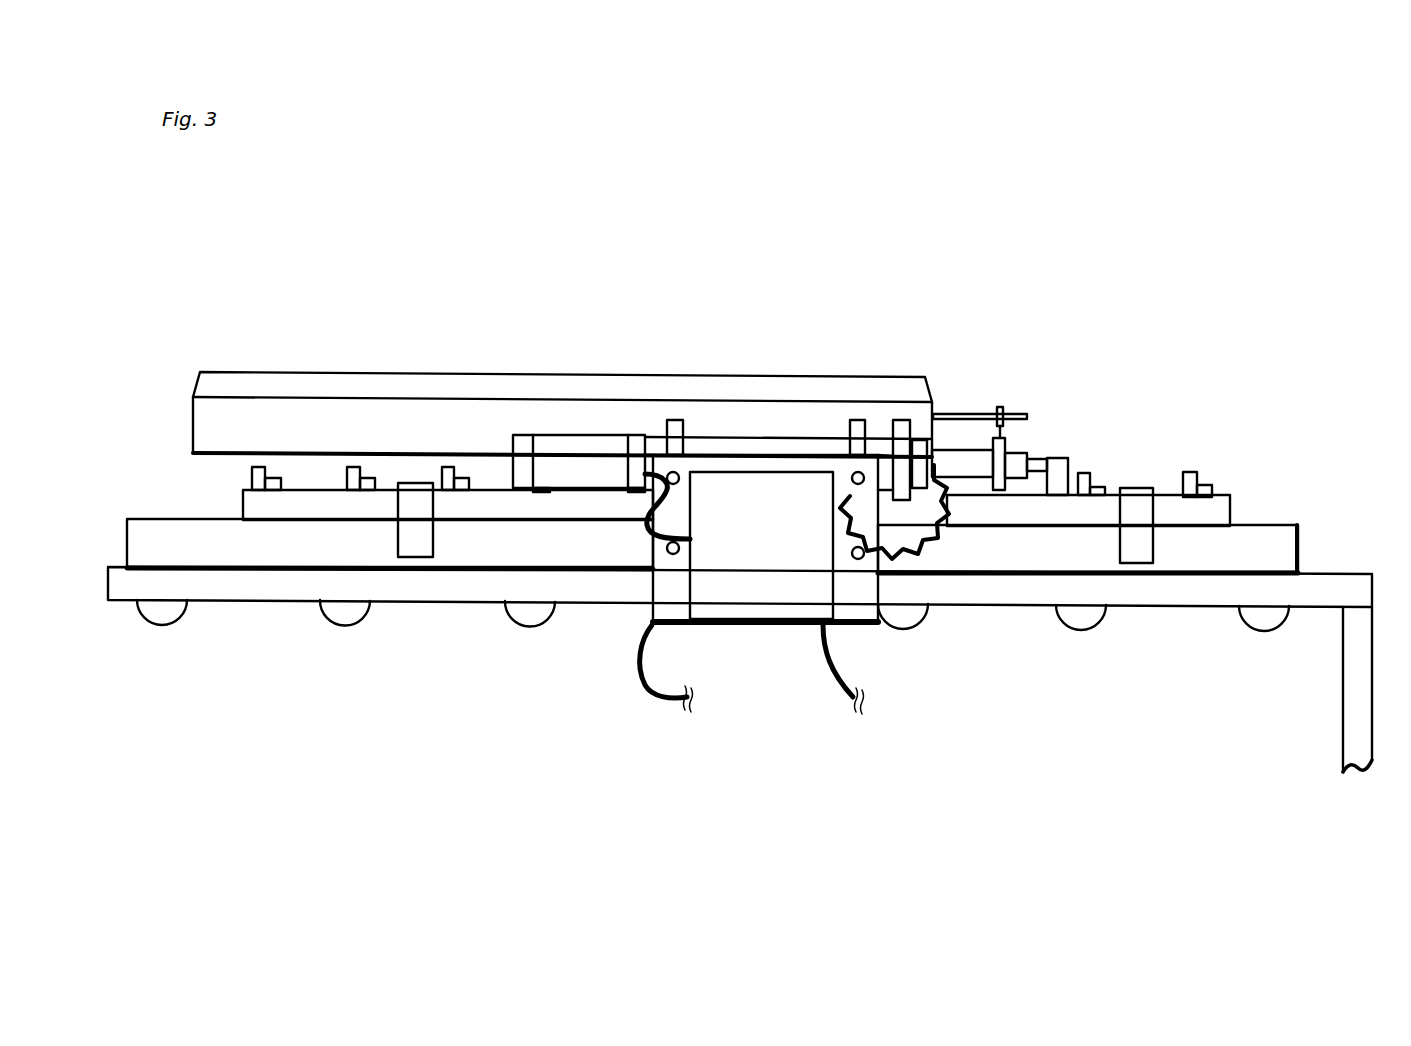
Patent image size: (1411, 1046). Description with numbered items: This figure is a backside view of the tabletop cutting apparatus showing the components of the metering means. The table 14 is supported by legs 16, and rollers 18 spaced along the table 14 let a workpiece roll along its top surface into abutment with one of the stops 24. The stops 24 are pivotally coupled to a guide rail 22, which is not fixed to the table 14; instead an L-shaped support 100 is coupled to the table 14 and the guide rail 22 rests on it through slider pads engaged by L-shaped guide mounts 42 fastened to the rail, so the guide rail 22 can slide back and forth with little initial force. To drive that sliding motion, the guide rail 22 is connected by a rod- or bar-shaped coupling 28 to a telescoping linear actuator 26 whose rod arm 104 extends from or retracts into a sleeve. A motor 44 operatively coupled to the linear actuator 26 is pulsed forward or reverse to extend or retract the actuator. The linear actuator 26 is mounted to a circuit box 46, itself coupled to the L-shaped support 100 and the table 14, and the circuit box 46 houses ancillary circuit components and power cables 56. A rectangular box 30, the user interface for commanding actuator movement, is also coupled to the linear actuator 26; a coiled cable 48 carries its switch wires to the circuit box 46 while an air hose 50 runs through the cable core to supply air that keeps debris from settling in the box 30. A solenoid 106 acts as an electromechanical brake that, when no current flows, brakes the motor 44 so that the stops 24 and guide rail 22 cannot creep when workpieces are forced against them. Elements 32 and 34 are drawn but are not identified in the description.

The table 14 is at (1188, 593).
The legs 16 is at (1355, 705).
The rollers 18 is at (342, 612).
The guide rail 22 is at (1210, 515).
The stops 24 is at (257, 480).
The linear actuator 26 is at (800, 445).
The rod- or bar-shaped coupling 28 is at (1057, 482).
The rectangular box 30 is at (310, 423).
The adjustment rod 32 is at (958, 415).
The adjustment screw 34 is at (1002, 407).
The guide mounts 42 is at (1138, 512).
The motor 44 is at (590, 460).
The circuit box 46 is at (785, 577).
The coiled cable 48 is at (920, 547).
The air hose 50 is at (833, 680).
The power cables 56 is at (643, 682).
The L-shaped support 100 is at (1263, 548).
The rod arm 104 is at (970, 465).
The solenoid 106 is at (525, 473).